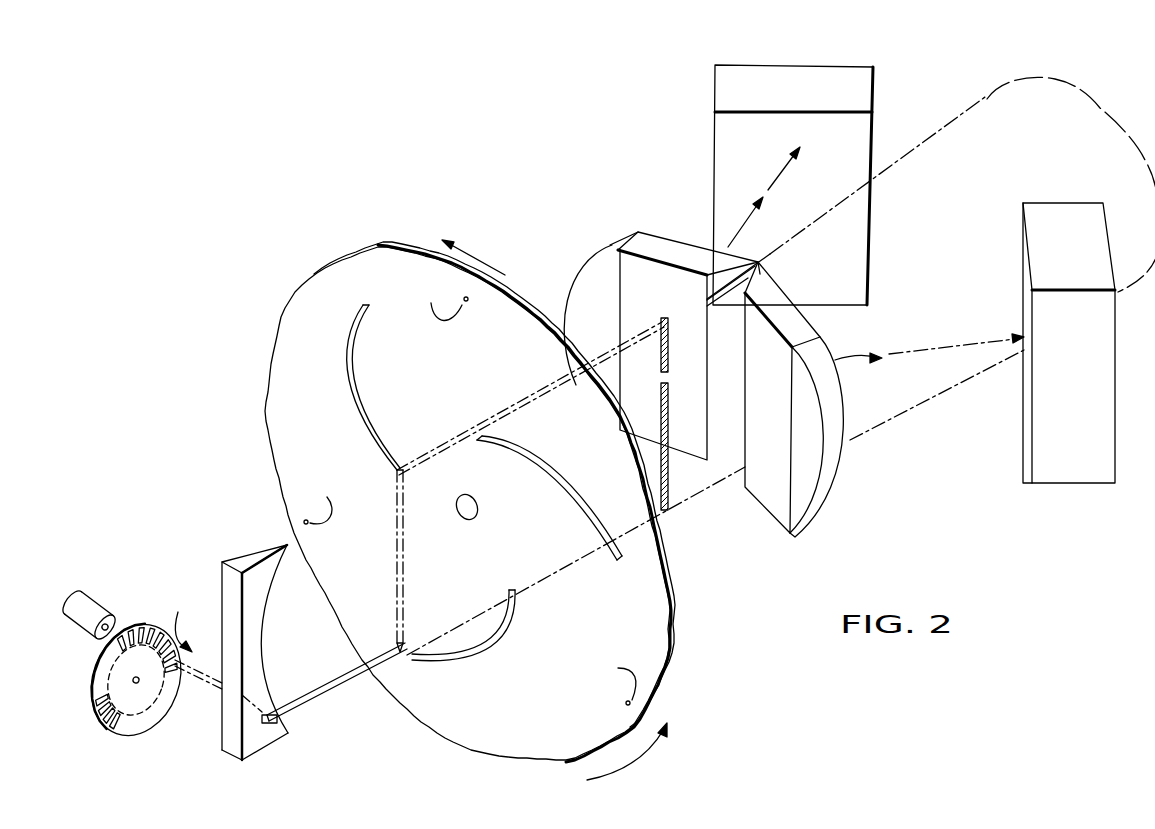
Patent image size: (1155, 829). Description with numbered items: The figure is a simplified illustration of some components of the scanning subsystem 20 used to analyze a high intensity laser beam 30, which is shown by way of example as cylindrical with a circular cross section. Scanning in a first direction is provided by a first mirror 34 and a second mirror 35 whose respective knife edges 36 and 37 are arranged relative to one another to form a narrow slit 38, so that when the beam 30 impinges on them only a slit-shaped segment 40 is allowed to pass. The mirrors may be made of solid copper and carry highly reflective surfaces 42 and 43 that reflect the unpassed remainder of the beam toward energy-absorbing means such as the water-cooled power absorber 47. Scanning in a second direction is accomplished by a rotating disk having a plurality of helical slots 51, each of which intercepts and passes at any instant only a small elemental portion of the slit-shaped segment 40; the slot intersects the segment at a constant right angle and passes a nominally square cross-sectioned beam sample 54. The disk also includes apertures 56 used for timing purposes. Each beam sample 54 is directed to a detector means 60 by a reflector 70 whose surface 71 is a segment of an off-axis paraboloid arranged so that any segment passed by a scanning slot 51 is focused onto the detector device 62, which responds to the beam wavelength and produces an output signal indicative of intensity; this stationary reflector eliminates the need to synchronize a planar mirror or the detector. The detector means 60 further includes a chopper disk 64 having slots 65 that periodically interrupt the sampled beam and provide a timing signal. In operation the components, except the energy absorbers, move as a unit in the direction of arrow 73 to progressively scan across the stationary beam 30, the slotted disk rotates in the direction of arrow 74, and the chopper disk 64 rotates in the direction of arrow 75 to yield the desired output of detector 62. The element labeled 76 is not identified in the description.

The scanning subsystem 20 is at (542, 150).
The high intensity laser beam 30 is at (988, 96).
The first mirror 34 is at (797, 537).
The second mirror 35 is at (660, 245).
The knife edge 36 is at (767, 272).
The knife edge 37 is at (772, 224).
The narrow slit 38 is at (762, 259).
The slit-shaped segment 40 is at (668, 493).
The highly reflective surface 42 is at (863, 358).
The highly reflective surface 43 is at (692, 243).
The energy-absorbing means 47 is at (728, 86).
The helical slots 51 is at (352, 363).
The beam sample 54 is at (346, 667).
The apertures 56 is at (470, 493).
The detector means 60 is at (149, 673).
The detector device 62 is at (88, 608).
The chopper disk 64 is at (116, 663).
The slots 65 is at (112, 731).
The reflector 70 is at (238, 652).
The surface 71 is at (262, 640).
The arrow 73 is at (466, 255).
The arrow 74 is at (620, 768).
The arrow 75 is at (189, 616).
The detector 76 is at (1105, 485).